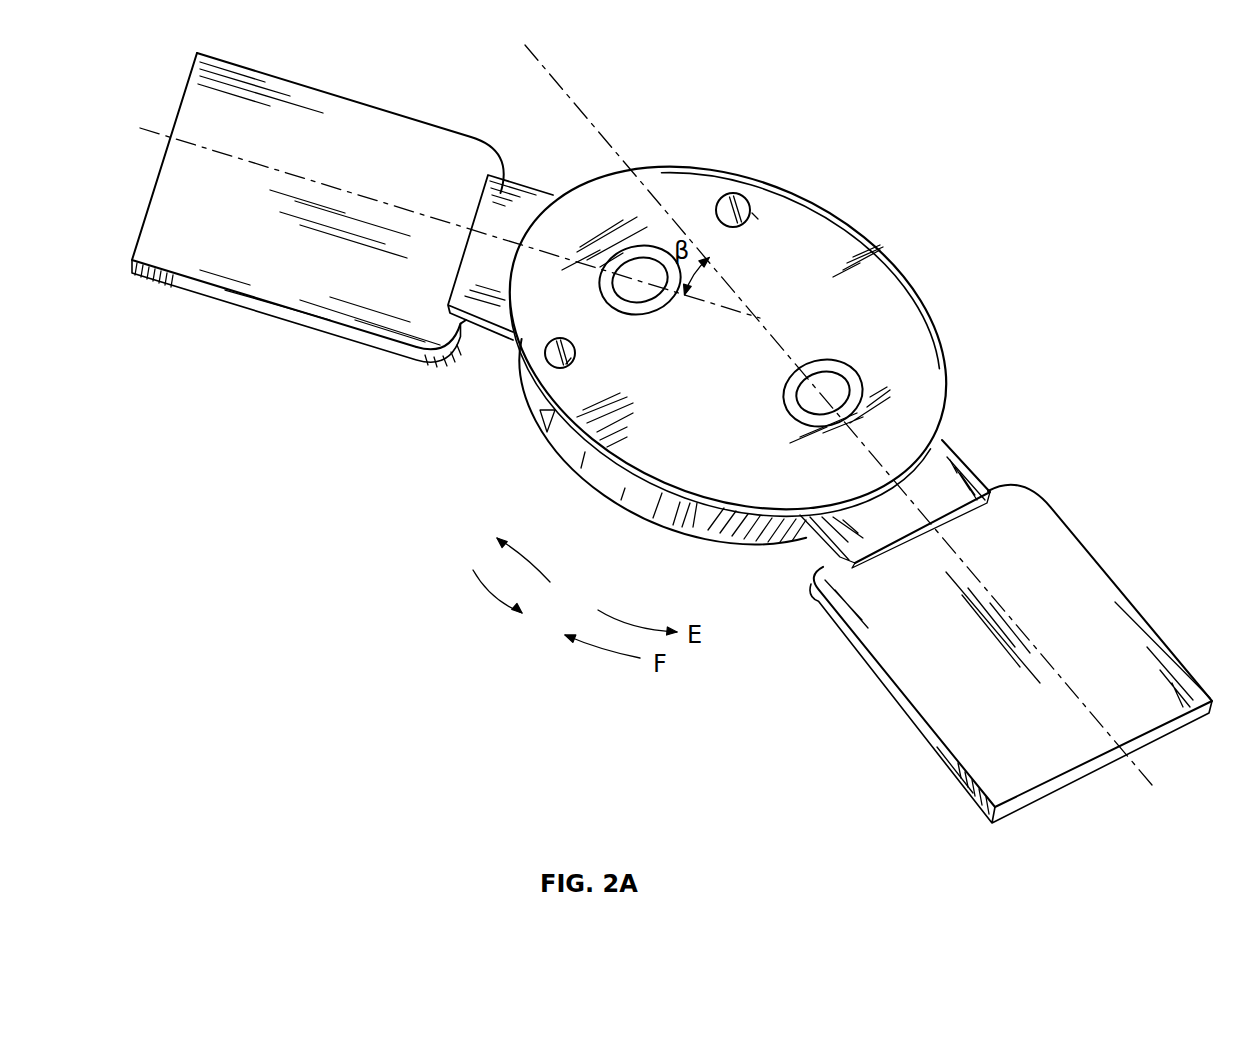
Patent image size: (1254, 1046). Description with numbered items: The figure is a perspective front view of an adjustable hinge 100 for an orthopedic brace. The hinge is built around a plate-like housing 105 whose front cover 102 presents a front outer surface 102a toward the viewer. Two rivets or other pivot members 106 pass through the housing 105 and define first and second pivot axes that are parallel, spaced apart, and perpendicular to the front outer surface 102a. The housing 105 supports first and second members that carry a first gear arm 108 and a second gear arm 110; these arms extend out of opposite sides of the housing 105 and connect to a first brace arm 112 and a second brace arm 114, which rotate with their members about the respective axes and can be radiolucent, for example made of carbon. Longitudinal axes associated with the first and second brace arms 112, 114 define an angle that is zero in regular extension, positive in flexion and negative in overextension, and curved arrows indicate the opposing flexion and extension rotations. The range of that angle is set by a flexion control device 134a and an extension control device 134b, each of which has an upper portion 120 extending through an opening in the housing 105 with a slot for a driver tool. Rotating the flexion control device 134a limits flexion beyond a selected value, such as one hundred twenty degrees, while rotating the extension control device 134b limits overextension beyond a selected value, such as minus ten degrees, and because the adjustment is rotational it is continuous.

The adjustable hinge 100 is at (950, 135).
The front cover 102 is at (720, 470).
The front outer surface 102a is at (770, 351).
The housing 105 is at (545, 455).
The pivot members 106 is at (647, 276).
The first gear arm 108 is at (524, 206).
The second gear arm 110 is at (942, 473).
The first brace arm 112 is at (431, 143).
The second brace arm 114 is at (1063, 576).
The upper portion 120 is at (752, 199).
The flexion control device 134a is at (560, 376).
The extension control device 134b is at (760, 207).